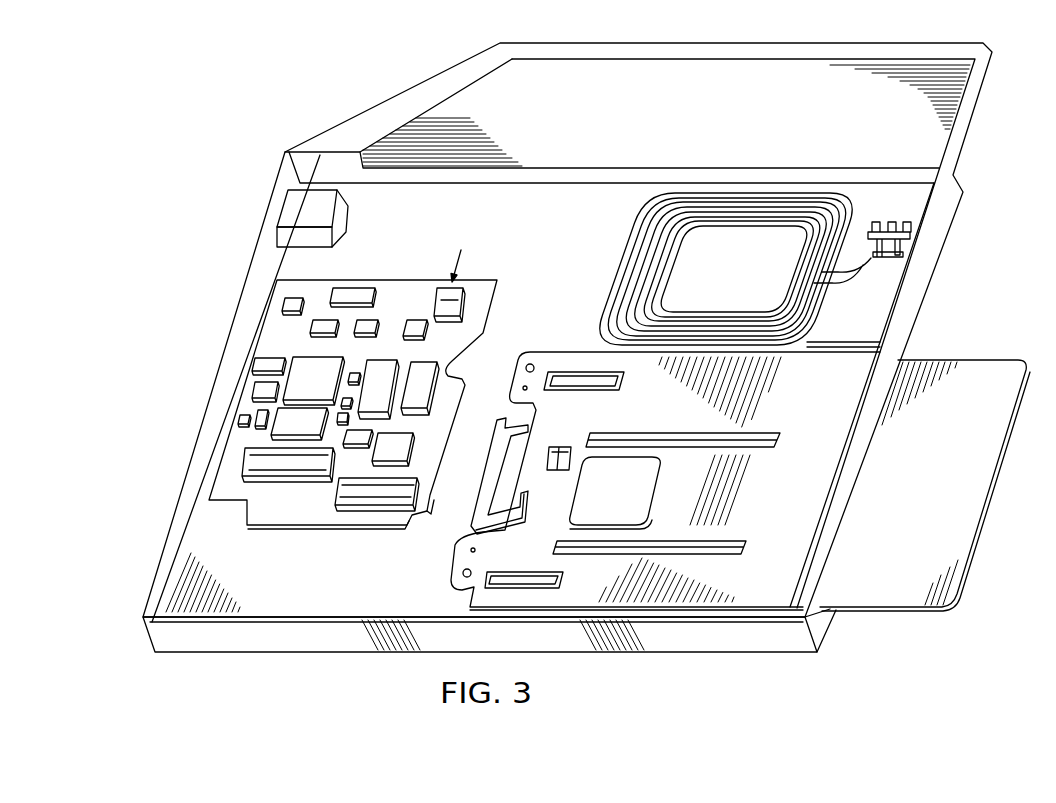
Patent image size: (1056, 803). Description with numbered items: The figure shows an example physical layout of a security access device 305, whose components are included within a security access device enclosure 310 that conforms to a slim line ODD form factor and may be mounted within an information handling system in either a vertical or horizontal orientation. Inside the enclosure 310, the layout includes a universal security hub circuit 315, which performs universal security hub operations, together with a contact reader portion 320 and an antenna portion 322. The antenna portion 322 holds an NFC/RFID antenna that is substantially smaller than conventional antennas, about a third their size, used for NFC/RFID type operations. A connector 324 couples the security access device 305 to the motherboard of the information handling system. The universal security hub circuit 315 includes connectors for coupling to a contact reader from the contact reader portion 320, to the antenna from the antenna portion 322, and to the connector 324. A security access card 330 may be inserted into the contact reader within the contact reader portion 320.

The security access device 305 is at (357, 82).
The security access device enclosure 310 is at (970, 107).
The universal security hub circuit 315 is at (327, 512).
The contact reader portion 320 is at (770, 597).
The antenna portion 322 is at (650, 203).
The connector 324 is at (290, 210).
The security access card 330 is at (973, 370).